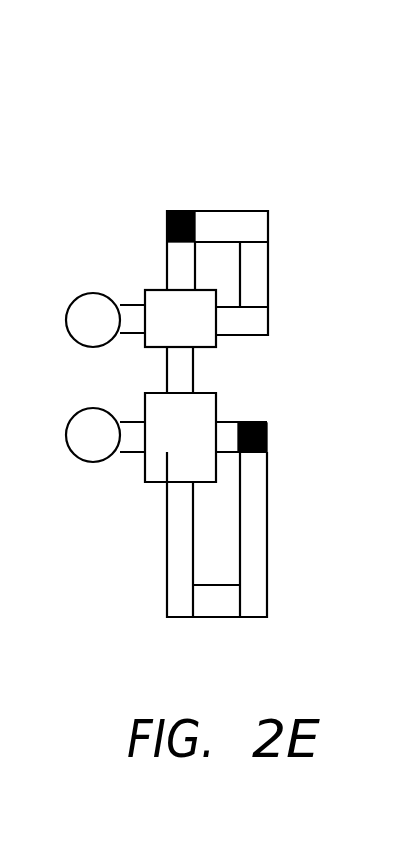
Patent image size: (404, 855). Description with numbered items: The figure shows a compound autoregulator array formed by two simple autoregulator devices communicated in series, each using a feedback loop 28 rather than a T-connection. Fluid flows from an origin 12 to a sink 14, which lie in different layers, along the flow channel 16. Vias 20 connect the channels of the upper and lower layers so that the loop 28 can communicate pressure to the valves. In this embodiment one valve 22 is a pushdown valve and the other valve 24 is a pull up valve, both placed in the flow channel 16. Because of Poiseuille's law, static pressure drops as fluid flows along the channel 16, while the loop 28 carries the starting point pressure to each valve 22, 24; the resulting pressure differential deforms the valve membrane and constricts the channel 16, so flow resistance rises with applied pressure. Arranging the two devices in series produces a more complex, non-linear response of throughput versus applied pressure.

The origin 12 is at (78, 297).
The sink 14 is at (93, 462).
The channel 16 is at (167, 369).
The via 20 is at (167, 213).
The pushdown valve 22 is at (206, 347).
The pushup valve 24 is at (142, 476).
The loop 28 is at (268, 237).